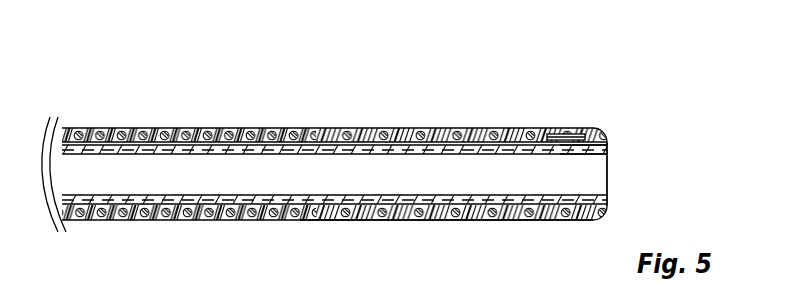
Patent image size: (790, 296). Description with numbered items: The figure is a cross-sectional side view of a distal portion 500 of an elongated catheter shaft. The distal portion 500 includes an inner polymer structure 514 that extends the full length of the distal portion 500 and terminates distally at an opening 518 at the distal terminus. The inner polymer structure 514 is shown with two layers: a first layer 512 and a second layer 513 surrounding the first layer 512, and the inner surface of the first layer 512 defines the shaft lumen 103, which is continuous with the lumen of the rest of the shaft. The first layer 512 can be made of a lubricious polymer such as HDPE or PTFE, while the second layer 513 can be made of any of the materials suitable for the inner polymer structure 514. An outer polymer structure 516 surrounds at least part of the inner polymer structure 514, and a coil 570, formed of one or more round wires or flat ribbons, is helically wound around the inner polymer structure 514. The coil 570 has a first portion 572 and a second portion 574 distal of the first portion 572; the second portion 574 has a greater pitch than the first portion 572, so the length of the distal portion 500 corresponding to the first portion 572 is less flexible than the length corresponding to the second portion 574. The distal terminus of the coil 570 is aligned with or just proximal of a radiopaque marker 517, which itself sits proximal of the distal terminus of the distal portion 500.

The distal portion 500 is at (58, 60).
The first portion 572 is at (300, 116).
The second portion 574 is at (540, 117).
The radiopaque marker 517 is at (574, 135).
The inner polymer structure 514 is at (612, 143).
The opening 518 is at (615, 181).
The lumen 103 is at (363, 186).
The first layer 512 is at (136, 155).
The second layer 513 is at (181, 145).
The outer polymer structure 516 is at (365, 221).
The coil 570 is at (449, 221).